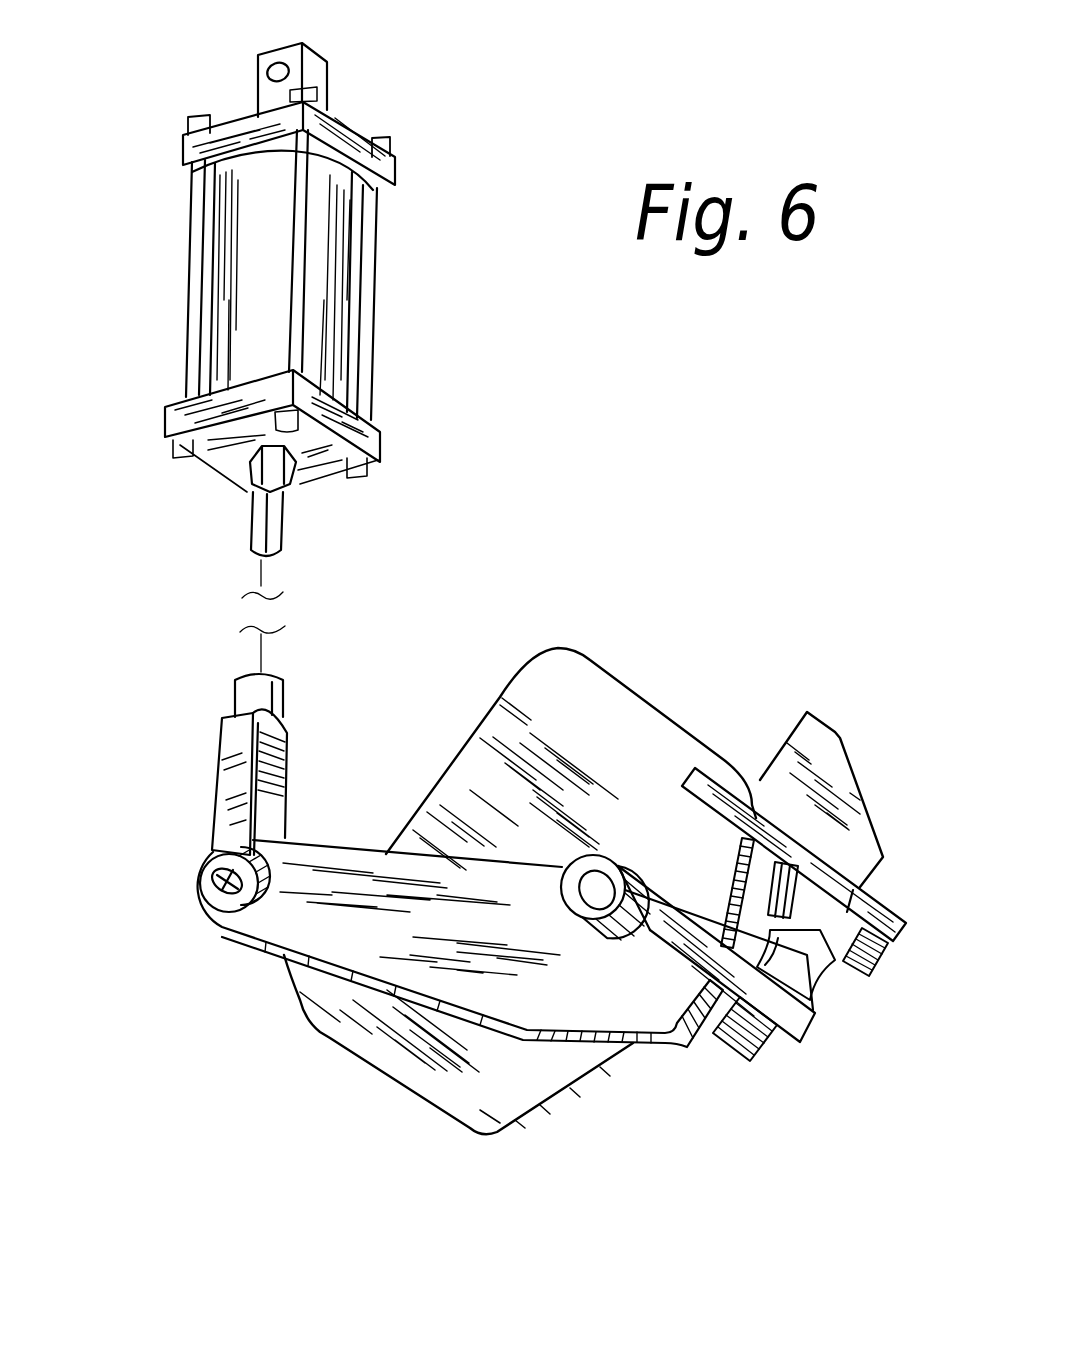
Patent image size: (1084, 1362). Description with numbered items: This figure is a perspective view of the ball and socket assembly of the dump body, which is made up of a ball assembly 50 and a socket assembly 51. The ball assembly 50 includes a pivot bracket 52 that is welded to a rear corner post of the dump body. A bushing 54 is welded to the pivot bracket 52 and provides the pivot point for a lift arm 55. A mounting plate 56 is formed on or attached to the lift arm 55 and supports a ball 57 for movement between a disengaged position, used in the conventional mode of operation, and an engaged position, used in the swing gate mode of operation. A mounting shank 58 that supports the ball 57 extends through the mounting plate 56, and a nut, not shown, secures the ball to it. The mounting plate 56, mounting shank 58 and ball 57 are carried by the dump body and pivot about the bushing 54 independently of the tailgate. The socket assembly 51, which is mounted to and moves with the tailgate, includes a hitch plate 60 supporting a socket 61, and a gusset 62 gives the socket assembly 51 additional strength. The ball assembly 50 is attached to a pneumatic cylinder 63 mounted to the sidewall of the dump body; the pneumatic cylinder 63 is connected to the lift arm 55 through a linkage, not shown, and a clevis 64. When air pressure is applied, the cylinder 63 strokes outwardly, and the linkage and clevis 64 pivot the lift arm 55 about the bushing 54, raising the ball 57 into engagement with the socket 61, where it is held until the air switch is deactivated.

The ball assembly 50 is at (684, 1068).
The socket assembly 51 is at (800, 673).
The pivot bracket 52 is at (386, 1075).
The bushing 54 is at (612, 905).
The lift arm 55 is at (283, 957).
The mounting plate 56 is at (810, 1024).
The ball 57 is at (727, 945).
The mounting shank 58 is at (760, 1043).
The hitch plate 60 is at (903, 920).
The socket 61 is at (878, 952).
The gusset 62 is at (853, 793).
The pneumatic cylinder 63 is at (345, 133).
The clevis 64 is at (220, 797).